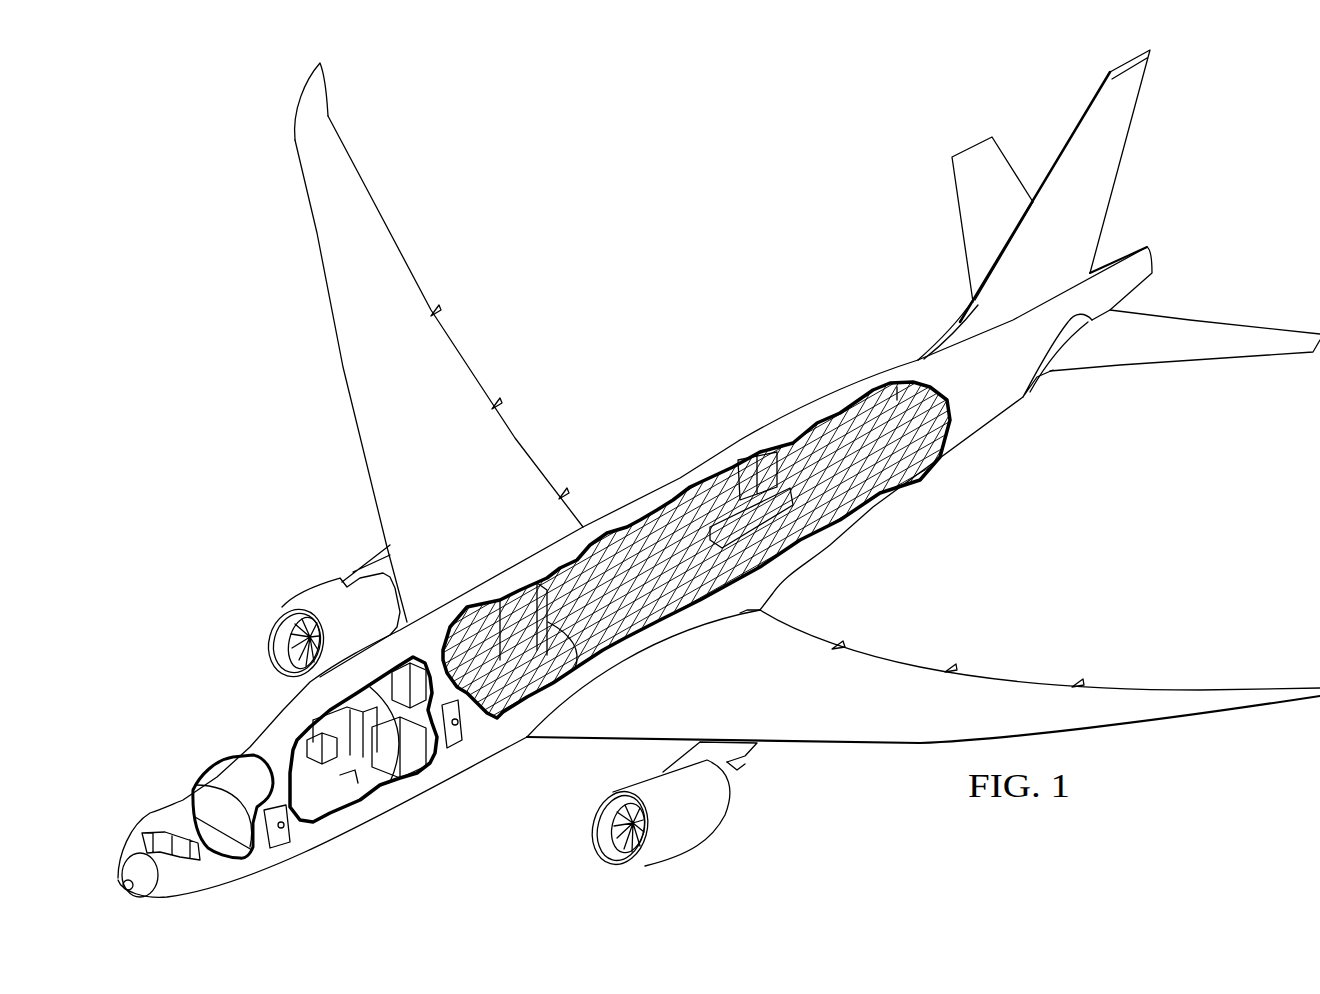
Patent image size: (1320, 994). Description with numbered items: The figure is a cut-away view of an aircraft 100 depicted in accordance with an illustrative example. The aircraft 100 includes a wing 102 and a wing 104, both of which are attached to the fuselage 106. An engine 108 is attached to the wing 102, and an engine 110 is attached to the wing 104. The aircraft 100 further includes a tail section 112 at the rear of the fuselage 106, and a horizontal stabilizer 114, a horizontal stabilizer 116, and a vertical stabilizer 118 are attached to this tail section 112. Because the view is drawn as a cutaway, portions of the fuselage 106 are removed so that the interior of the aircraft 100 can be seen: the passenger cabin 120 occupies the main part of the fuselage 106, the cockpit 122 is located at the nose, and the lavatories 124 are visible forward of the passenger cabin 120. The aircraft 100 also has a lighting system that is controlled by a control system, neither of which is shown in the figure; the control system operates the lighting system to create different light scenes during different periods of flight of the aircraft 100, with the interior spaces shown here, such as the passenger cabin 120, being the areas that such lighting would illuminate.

The aircraft 100 is at (610, 313).
The wing 102 is at (329, 297).
The wing 104 is at (857, 744).
The fuselage 106 is at (636, 496).
The engine 108 is at (318, 588).
The engine 110 is at (697, 837).
The tail section 112 is at (1224, 177).
The horizontal stabilizer 114 is at (965, 233).
The horizontal stabilizer 116 is at (1228, 327).
The vertical stabilizer 118 is at (1121, 162).
The passenger cabin 120 is at (500, 722).
The cockpit 122 is at (203, 804).
The lavatories 124 is at (364, 765).